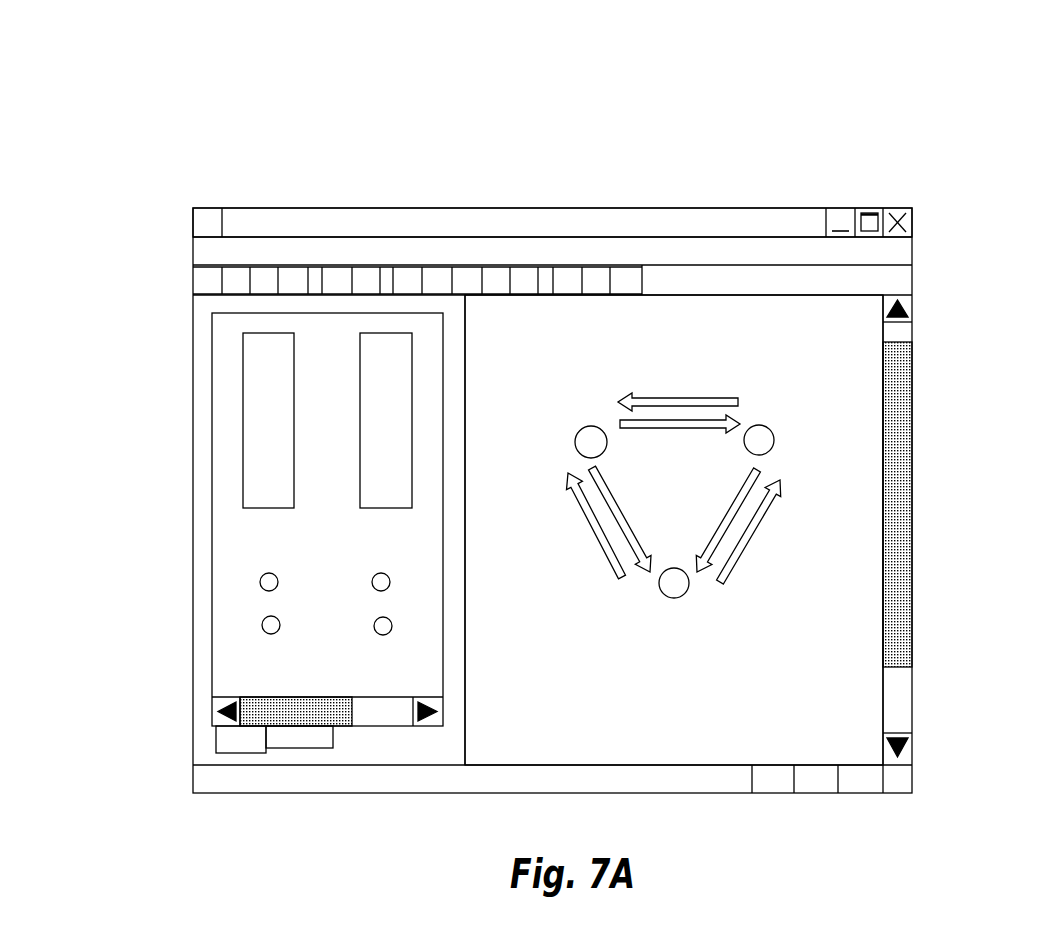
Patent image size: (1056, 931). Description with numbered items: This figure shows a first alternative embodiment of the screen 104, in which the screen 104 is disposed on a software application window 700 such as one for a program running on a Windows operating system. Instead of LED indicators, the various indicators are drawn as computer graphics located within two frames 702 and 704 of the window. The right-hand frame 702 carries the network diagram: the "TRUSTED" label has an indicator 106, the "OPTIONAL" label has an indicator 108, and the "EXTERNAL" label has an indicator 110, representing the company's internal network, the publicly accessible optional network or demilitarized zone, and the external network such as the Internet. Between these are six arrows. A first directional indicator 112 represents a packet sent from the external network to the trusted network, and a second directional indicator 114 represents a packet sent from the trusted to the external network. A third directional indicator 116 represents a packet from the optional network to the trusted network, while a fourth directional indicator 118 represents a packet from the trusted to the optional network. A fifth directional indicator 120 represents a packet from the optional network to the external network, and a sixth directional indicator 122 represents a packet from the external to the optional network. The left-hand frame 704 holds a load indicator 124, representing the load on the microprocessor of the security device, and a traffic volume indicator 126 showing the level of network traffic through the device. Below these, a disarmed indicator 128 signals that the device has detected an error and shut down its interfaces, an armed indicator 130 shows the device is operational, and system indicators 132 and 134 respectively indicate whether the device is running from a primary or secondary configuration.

The screen 104 is at (395, 173).
The software application window 700 is at (558, 154).
The indicator 106 is at (591, 426).
The indicator 108 is at (689, 583).
The indicator 110 is at (738, 420).
The first directional indicator 112 is at (738, 392).
The second directional indicator 114 is at (774, 440).
The third directional indicator 116 is at (588, 523).
The fourth directional indicator 118 is at (623, 538).
The fifth directional indicator 120 is at (753, 522).
The sixth directional indicator 122 is at (750, 493).
The load indicator 124 is at (255, 410).
The traffic volume indicator 126 is at (380, 370).
The disarmed indicator 128 is at (260, 582).
The armed indicator 130 is at (262, 625).
The system indicator 132 is at (381, 591).
The system indicator 134 is at (383, 635).
The frame 702 is at (835, 695).
The frame 704 is at (245, 667).